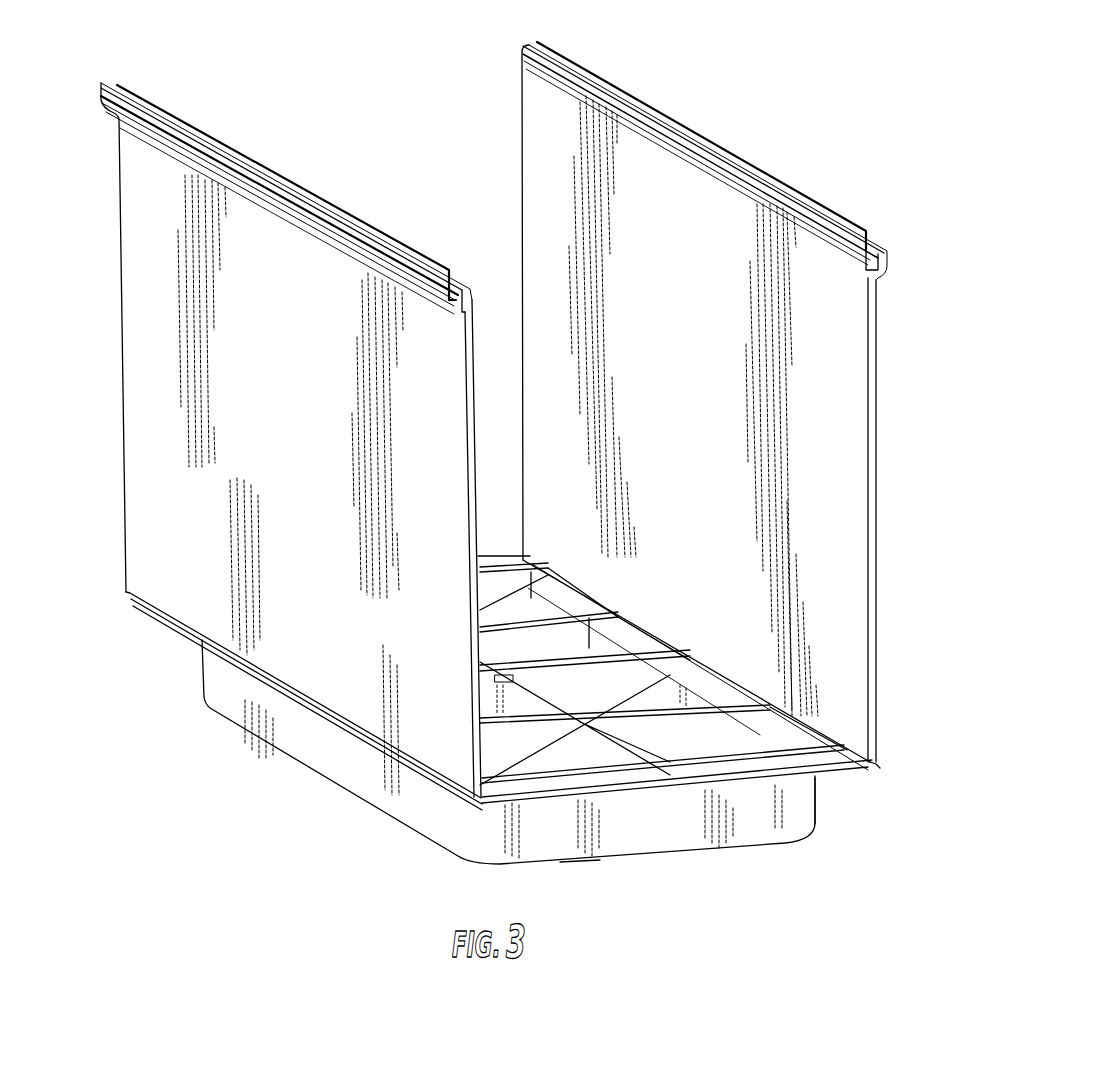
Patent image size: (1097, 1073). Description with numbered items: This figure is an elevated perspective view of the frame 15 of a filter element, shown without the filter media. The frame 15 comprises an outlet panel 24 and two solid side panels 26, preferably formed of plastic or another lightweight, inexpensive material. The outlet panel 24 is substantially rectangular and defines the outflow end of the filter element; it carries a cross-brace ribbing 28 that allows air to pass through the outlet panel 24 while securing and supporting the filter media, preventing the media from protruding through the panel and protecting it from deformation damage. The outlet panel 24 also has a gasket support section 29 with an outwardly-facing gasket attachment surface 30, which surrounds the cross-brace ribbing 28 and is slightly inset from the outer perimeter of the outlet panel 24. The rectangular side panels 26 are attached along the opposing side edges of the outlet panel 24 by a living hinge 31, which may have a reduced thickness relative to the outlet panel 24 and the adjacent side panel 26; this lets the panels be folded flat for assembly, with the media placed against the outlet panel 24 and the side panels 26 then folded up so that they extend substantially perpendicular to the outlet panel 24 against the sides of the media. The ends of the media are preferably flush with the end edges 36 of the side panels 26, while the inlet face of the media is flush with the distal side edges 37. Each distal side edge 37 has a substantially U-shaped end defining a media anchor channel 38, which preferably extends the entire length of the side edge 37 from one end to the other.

The frame 15 is at (499, 463).
The outlet panel 24 is at (685, 693).
The side panels 26 is at (501, 420).
The cross-brace ribbing 28 is at (508, 771).
The gasket support section 29 is at (846, 827).
The gasket attachment surface 30 is at (608, 885).
The living hinge 31 is at (522, 701).
The end edges 36 is at (499, 456).
The distal side edges 37 is at (494, 178).
The media anchor channel 38 is at (491, 156).